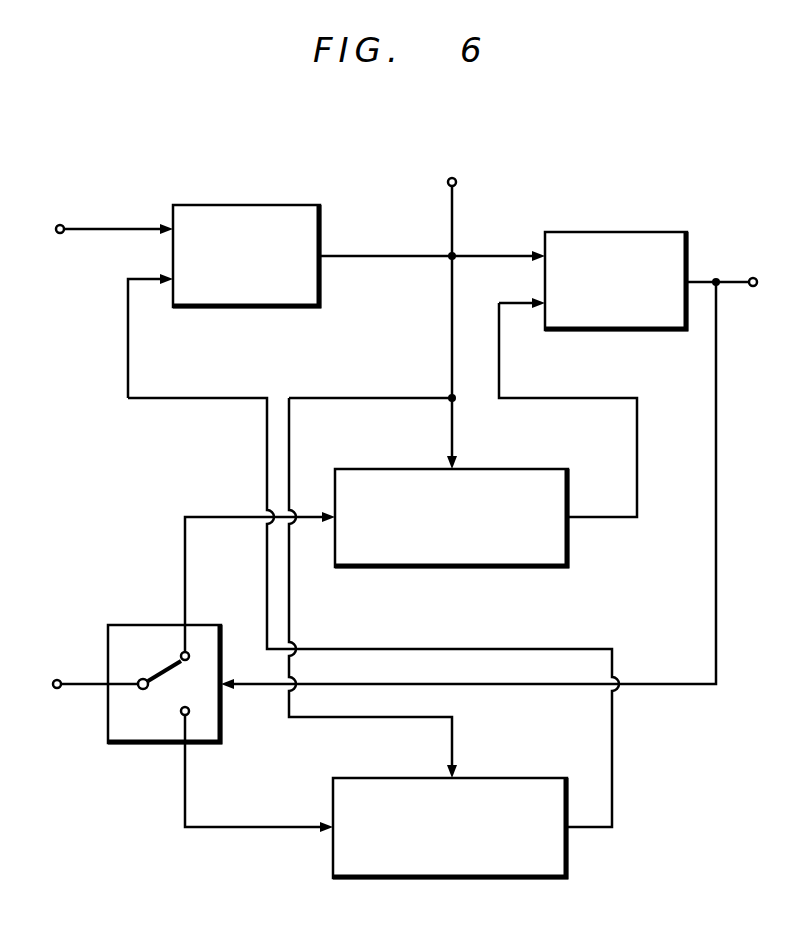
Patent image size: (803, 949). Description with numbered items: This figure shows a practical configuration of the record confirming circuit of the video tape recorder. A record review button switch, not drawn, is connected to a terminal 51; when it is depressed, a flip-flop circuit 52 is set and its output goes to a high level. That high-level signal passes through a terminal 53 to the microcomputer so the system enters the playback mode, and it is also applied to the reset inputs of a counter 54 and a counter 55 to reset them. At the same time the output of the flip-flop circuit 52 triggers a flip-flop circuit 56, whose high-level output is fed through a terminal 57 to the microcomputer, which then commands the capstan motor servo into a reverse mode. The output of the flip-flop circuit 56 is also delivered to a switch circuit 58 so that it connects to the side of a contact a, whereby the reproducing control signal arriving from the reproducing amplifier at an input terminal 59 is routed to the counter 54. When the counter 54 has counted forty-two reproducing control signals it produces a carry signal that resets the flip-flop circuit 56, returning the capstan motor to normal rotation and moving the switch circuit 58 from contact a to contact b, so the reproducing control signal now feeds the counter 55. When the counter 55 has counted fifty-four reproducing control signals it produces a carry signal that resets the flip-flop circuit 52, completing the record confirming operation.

The terminal 51 is at (64, 226).
The flip-flop circuit 52 is at (276, 205).
The terminal 53 is at (456, 182).
The counter 54 is at (490, 469).
The counter 55 is at (490, 778).
The flip-flop circuit 56 is at (595, 232).
The terminal 57 is at (751, 278).
The switch circuit 58 is at (135, 625).
The input terminal 59 is at (57, 680).